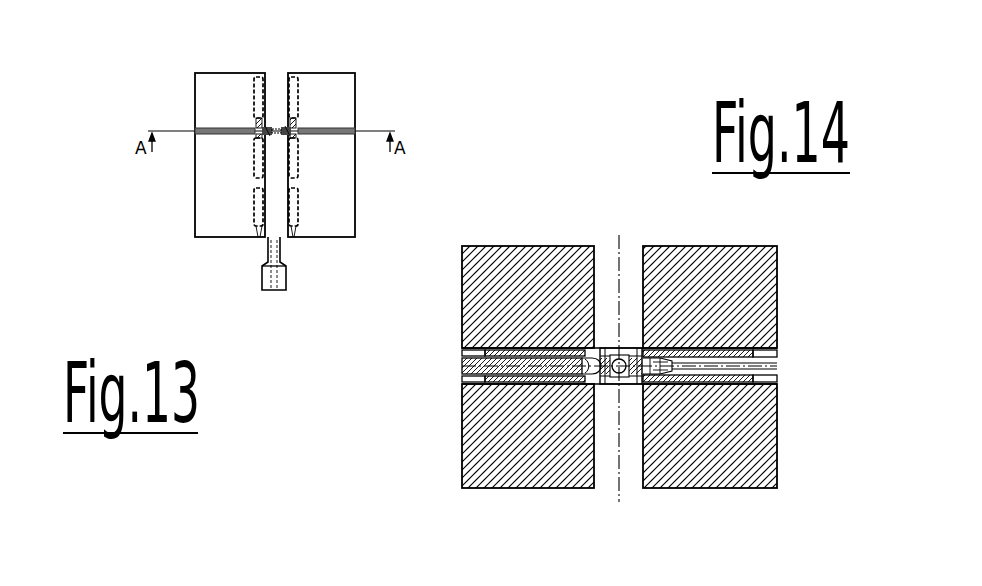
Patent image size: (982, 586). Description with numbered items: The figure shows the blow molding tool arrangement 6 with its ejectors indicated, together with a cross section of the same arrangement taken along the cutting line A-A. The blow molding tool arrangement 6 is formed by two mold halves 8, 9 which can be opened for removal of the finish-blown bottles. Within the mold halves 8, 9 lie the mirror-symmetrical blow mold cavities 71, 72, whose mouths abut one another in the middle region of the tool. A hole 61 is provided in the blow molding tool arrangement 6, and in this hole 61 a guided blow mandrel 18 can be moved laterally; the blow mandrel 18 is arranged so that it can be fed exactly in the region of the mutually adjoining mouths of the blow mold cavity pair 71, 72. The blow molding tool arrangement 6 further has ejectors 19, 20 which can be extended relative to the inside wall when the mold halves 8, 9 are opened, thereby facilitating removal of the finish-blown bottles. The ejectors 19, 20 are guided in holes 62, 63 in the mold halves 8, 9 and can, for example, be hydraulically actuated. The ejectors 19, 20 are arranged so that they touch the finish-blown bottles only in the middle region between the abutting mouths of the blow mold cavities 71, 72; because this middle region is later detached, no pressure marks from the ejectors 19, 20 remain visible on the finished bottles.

In FIG. 13, the blow molding tool arrangement 6 is at (141, 232).
In FIG. 14, the blow molding tool arrangement 6 is at (522, 503).
In FIG. 13, the mold half 8 is at (200, 86).
In FIG. 14, the mold half 8 is at (545, 264).
In FIG. 13, the mold half 9 is at (343, 88).
In FIG. 14, the mold half 9 is at (758, 277).
In FIG. 14, the blow mandrel 18 is at (680, 374).
In FIG. 14, the ejector 19 is at (658, 353).
In FIG. 14, the ejector 20 is at (525, 385).
In FIG. 14, the hole 61 is at (717, 367).
In FIG. 13, the hole 62 is at (320, 133).
In FIG. 14, the hole 62 is at (762, 353).
In FIG. 13, the hole 63 is at (230, 135).
In FIG. 14, the hole 63 is at (472, 354).
In FIG. 13, the blow mold cavity 71 is at (262, 78).
In FIG. 13, the blow mold cavity 72 is at (292, 155).